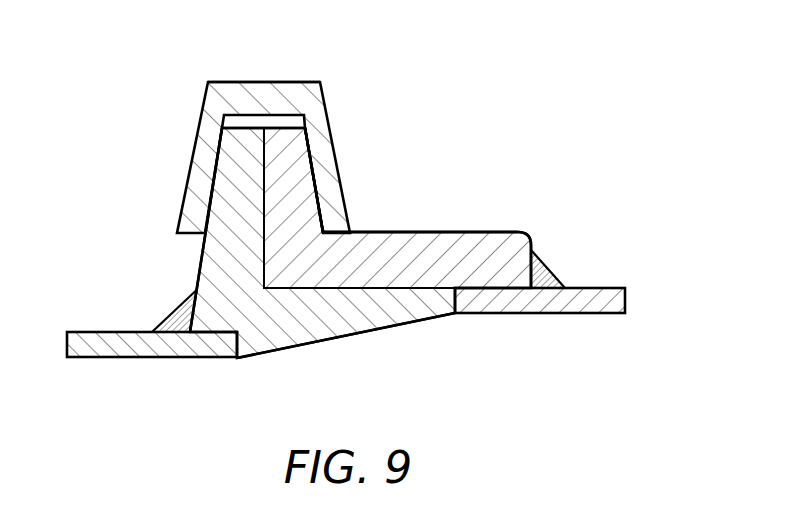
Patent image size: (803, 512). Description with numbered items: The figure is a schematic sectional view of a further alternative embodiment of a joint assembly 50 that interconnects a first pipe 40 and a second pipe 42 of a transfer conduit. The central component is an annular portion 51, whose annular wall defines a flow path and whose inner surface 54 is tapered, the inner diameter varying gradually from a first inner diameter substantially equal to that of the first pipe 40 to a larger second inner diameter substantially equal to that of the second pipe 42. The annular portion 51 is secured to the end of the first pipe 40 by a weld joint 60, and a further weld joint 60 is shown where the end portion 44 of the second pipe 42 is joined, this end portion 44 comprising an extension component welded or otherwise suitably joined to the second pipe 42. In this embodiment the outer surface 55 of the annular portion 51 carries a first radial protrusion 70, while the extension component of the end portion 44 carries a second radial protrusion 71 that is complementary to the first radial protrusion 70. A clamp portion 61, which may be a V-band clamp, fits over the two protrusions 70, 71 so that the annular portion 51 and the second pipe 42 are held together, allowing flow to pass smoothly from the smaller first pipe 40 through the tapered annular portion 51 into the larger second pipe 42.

The first pipe 40 is at (92, 358).
The second pipe 42 is at (603, 313).
The end portion of the second pipe 44 is at (479, 232).
The joint assembly 50 is at (346, 212).
The annular portion 51 is at (335, 275).
The inner surface of the annular portion 54 is at (355, 334).
The outer surface of the annular portion 55 is at (358, 288).
The weld joint 60 is at (170, 311).
The clamp portion 61 is at (295, 82).
The first radial protrusion 70 is at (200, 256).
The second radial protrusion 71 is at (317, 178).